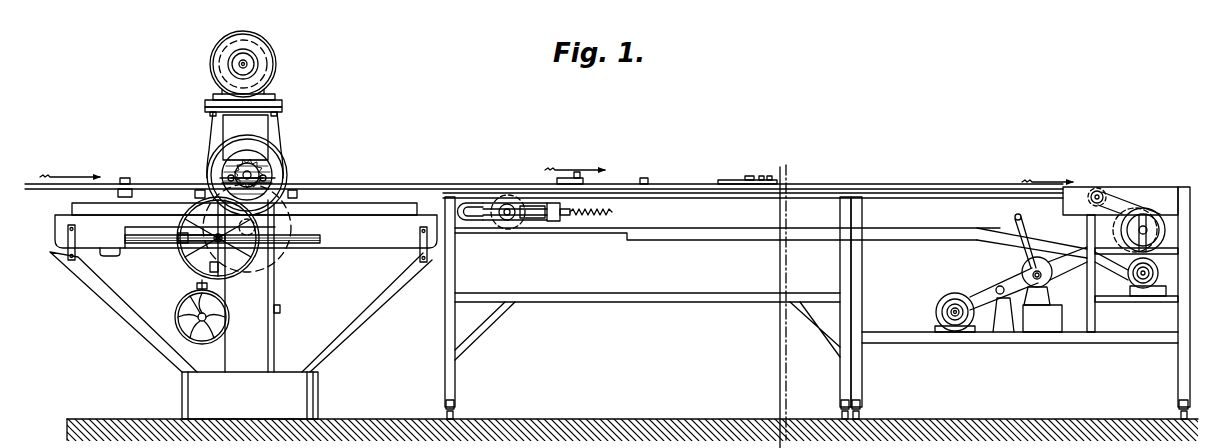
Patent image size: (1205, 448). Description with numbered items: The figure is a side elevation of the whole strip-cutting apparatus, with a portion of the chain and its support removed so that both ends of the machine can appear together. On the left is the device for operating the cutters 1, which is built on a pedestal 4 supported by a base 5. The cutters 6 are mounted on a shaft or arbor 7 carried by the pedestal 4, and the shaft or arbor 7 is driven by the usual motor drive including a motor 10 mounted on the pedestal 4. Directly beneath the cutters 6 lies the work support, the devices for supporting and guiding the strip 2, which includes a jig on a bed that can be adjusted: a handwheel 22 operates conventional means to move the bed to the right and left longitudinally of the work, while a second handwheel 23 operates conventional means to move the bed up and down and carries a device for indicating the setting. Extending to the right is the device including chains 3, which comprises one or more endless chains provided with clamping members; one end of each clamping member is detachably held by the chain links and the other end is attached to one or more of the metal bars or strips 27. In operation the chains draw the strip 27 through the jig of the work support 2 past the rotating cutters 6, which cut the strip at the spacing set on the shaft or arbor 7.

The device for operating the cutters 1 is at (270, 156).
The devices for supporting and guiding the strip 2 is at (365, 200).
The device including chains for moving the strip 3 is at (777, 186).
The pedestal 4 is at (272, 341).
The base 5 is at (318, 388).
The cutters 6 is at (275, 168).
The shaft or arbor 7 is at (225, 172).
The motor 10 is at (270, 42).
The handwheel 22 is at (185, 258).
The handwheel 23 is at (199, 290).
The strip 27 is at (408, 185).